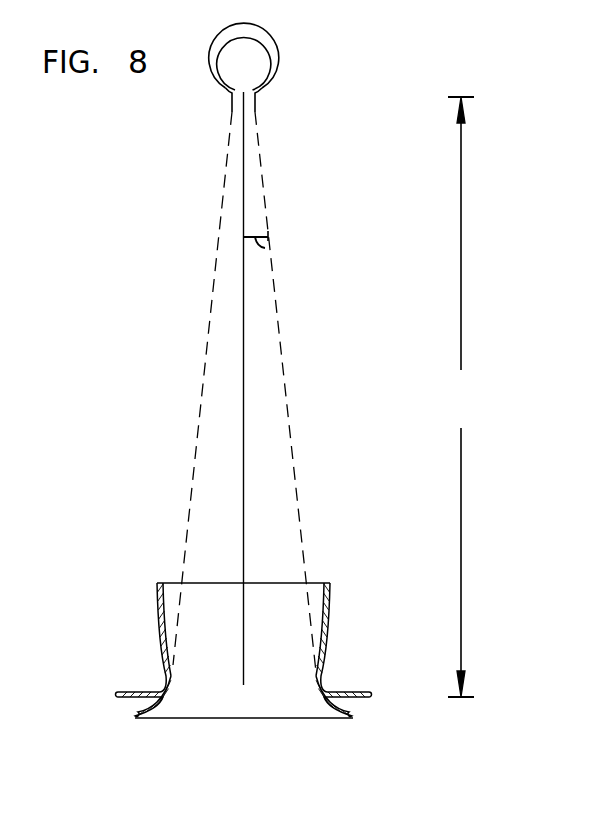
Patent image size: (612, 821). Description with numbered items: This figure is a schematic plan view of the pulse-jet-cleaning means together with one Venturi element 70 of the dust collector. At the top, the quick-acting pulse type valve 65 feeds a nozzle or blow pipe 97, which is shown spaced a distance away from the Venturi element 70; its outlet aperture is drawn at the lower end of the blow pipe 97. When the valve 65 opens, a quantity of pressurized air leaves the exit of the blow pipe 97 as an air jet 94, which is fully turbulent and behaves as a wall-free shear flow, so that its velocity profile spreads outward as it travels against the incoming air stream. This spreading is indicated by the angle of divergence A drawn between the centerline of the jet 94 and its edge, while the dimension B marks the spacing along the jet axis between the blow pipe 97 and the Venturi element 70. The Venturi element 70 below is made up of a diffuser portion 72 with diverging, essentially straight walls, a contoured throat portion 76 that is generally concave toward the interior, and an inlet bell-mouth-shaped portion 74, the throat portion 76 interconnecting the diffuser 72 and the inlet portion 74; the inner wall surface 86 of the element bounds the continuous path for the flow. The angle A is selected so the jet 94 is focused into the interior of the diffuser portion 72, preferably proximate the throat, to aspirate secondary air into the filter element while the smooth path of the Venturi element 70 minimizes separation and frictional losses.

The pulse type valve 65 is at (290, 46).
The blow pipe 97 is at (254, 96).
The air jet 94 is at (272, 389).
The angle of divergence A is at (265, 248).
The distance B is at (461, 397).
The Venturi element 70 is at (350, 631).
The diffuser portion 72 is at (123, 596).
The contoured throat portion 76 is at (133, 676).
The inlet bell-mouth-shaped portion 74 is at (162, 732).
The inner wall surface 86 is at (304, 690).